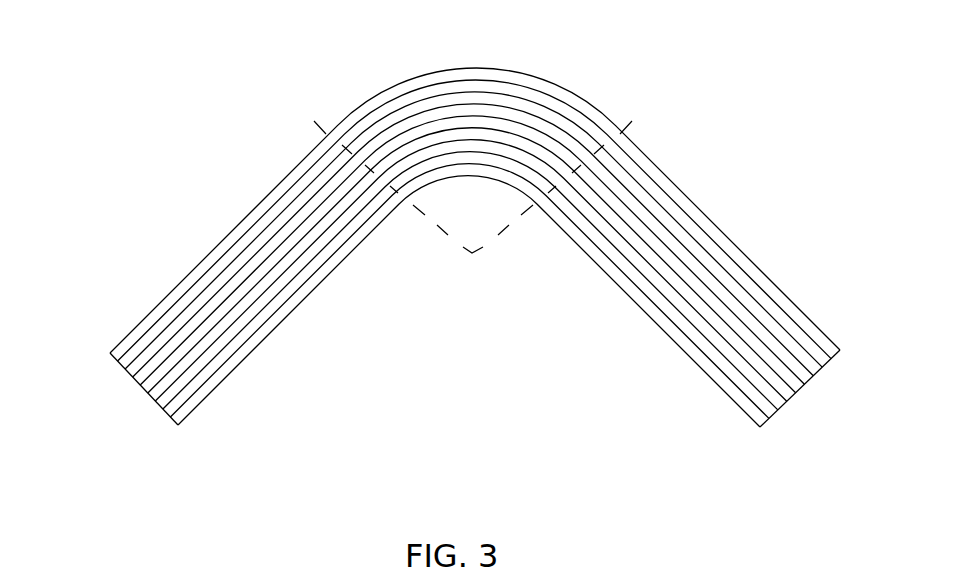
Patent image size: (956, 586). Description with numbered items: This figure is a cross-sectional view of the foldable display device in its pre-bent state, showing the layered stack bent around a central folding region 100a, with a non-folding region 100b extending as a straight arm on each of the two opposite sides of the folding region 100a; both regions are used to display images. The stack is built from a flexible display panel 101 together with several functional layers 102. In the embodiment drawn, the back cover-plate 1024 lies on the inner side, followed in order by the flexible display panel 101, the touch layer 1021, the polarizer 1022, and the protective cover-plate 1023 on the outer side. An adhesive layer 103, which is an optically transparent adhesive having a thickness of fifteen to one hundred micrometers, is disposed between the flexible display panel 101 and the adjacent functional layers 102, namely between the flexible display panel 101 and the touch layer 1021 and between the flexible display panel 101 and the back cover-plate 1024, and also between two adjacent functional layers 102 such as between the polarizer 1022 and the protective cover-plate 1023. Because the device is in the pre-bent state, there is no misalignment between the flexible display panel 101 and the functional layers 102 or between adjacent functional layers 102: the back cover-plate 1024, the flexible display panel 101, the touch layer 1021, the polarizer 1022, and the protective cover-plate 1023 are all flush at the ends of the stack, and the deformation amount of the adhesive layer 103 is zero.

The folding region 100a is at (475, 39).
The non-folding region 100b is at (246, 194).
The flexible display panel 101 is at (208, 355).
The functional layer 102 is at (92, 92).
The touch layer 1021 is at (266, 363).
The polarizer 1022 is at (152, 352).
The protective cover-plate 1023 is at (160, 307).
The back cover-plate 1024 is at (207, 420).
The adhesive layer 103 is at (118, 367).